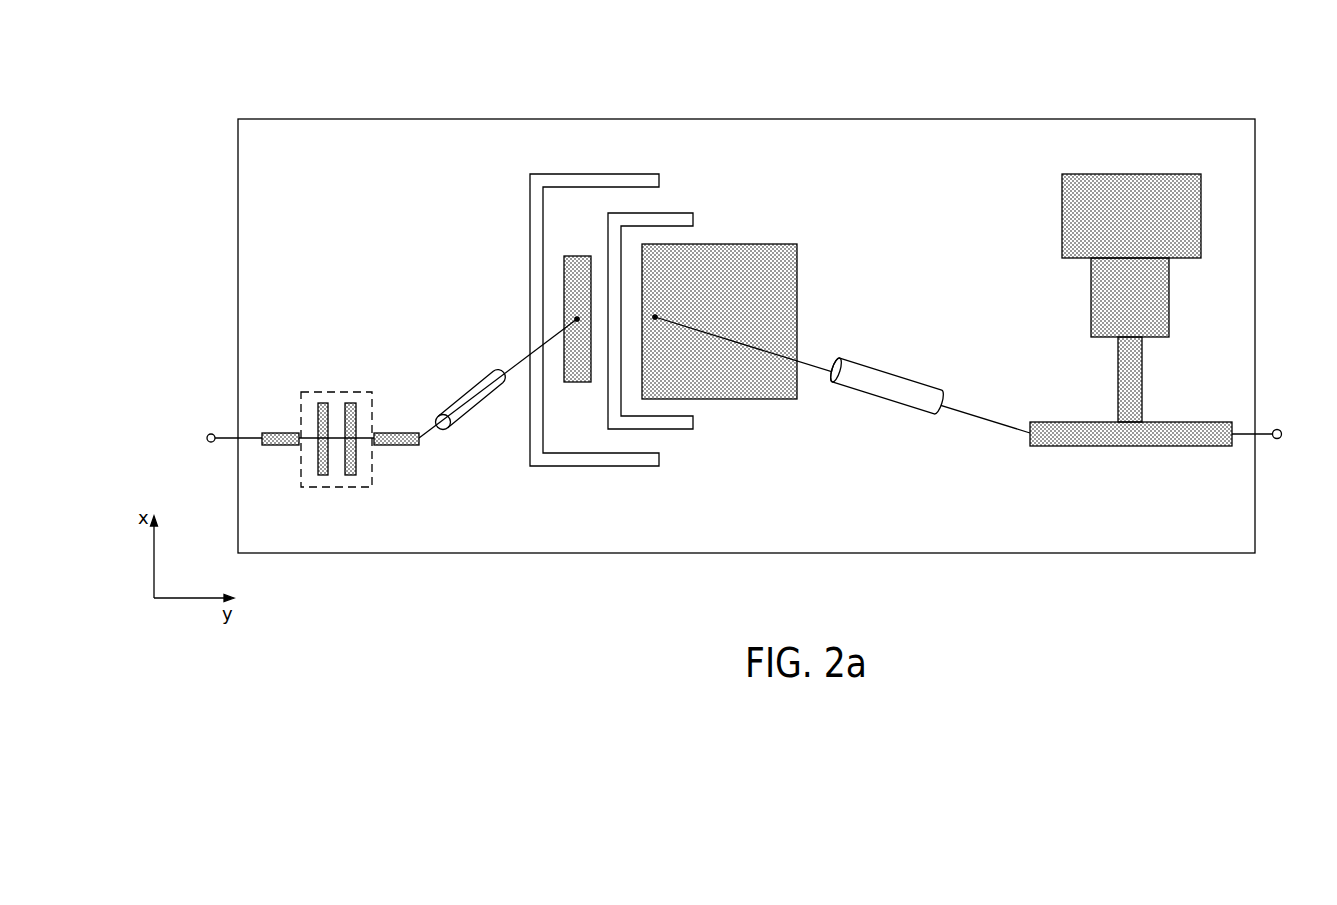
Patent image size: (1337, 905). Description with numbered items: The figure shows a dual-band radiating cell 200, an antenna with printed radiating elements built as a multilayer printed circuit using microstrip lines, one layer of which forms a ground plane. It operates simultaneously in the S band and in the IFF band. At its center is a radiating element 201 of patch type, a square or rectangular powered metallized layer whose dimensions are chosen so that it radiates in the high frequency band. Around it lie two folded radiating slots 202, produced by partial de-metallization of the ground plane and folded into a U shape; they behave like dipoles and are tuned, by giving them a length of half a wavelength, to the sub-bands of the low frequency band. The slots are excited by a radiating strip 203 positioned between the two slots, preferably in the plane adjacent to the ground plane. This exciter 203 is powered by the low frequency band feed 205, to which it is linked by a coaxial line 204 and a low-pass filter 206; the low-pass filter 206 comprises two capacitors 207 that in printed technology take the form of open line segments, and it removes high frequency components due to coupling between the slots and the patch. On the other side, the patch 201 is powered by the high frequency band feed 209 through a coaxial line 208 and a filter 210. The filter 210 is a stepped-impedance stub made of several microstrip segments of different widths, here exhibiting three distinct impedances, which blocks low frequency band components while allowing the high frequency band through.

The radiating cell 200 is at (1223, 118).
The radiating element of patch type 201 is at (778, 242).
The folded radiating slots 202 is at (659, 178).
The radiating strip 203 is at (565, 267).
The coaxial line 204 is at (475, 407).
The low frequency band feed 205 is at (207, 432).
The low-pass filter 206 is at (308, 487).
The capacitors 207 is at (349, 403).
The coaxial line 208 is at (897, 377).
The high frequency band feed 209 is at (1281, 430).
The filter 210 is at (1169, 326).